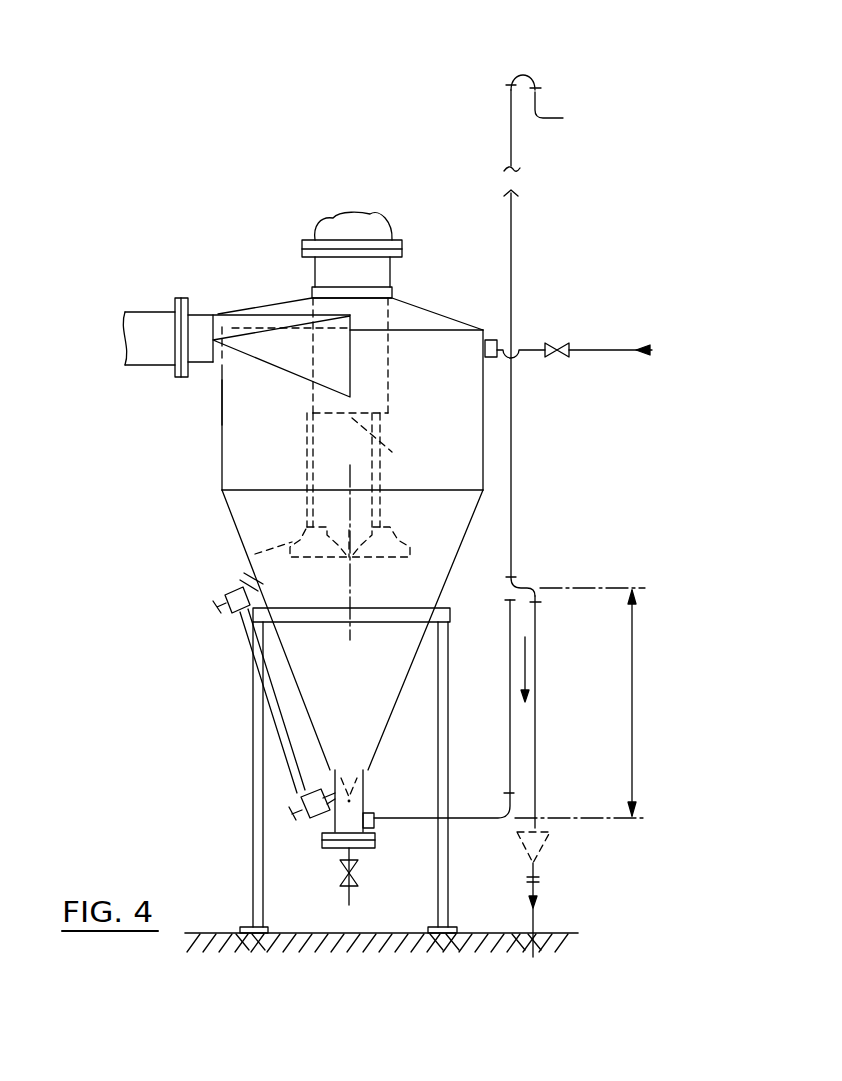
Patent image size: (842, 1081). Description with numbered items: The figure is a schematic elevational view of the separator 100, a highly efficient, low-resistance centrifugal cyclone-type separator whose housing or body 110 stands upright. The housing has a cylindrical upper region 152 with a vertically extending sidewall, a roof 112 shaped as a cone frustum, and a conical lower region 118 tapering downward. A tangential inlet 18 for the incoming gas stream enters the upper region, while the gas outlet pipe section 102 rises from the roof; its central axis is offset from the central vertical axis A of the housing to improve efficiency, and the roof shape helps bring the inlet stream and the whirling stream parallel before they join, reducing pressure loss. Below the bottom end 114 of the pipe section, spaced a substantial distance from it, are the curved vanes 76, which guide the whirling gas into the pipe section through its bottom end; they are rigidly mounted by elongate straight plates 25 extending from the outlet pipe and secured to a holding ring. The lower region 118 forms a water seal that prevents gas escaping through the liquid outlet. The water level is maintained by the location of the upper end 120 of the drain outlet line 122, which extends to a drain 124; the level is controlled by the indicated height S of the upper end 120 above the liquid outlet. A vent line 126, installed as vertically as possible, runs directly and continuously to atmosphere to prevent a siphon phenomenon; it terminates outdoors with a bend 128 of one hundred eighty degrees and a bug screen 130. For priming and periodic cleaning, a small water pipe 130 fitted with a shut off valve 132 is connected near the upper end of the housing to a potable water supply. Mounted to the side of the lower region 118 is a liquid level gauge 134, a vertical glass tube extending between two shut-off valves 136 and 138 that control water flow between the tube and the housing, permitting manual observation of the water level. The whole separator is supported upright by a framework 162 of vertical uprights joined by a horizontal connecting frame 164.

The tangential inlet 18 is at (279, 346).
The elongate straight plates 25 is at (307, 456).
The vanes 76 is at (255, 554).
The separator 100 is at (206, 492).
The gas outlet pipe section 102 is at (392, 378).
The separator body 110 is at (235, 432).
The roof 112 is at (427, 308).
The bottom end of the pipe section 114 is at (394, 444).
The conical lower region 118 is at (237, 525).
The upper end of drain outlet line 120 is at (512, 580).
The drain outlet line 122 is at (535, 713).
The drain 124 is at (545, 846).
The vent line 126 is at (512, 268).
The 180 degree bend 128 is at (535, 72).
The water pipe 130 is at (627, 381).
The shut off valve 132 is at (553, 358).
The liquid level gauge 134 is at (277, 717).
The shut-off valve 136 is at (233, 606).
The shut-off valve 138 is at (307, 824).
The cylindrical upper region 152 is at (235, 400).
The framework 162 is at (257, 783).
The horizontal connecting frame 164 is at (400, 617).
The central vertical axis A is at (350, 508).
The height S is at (584, 703).